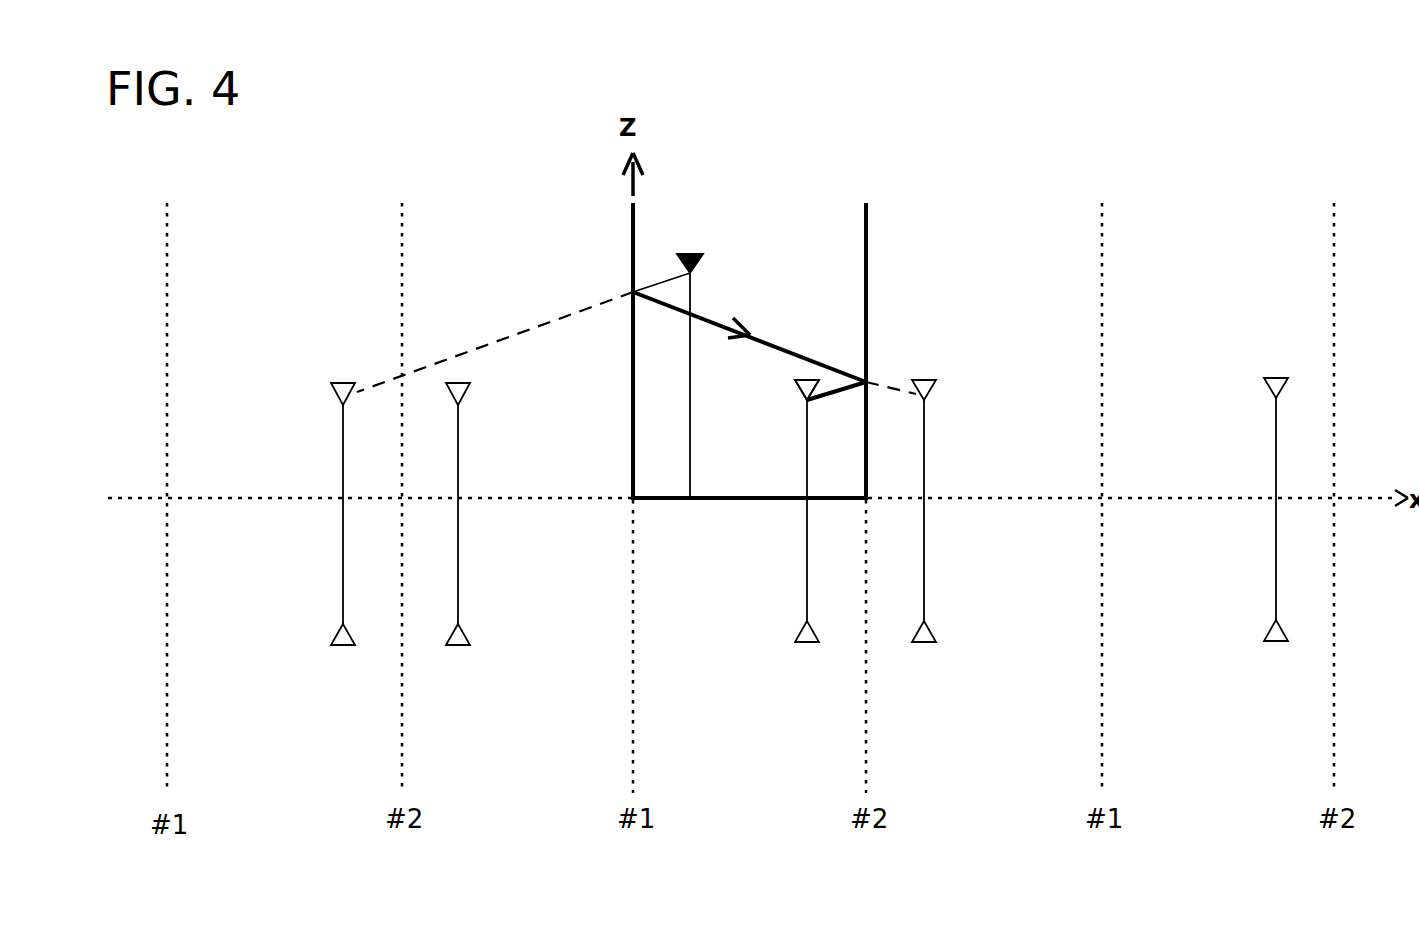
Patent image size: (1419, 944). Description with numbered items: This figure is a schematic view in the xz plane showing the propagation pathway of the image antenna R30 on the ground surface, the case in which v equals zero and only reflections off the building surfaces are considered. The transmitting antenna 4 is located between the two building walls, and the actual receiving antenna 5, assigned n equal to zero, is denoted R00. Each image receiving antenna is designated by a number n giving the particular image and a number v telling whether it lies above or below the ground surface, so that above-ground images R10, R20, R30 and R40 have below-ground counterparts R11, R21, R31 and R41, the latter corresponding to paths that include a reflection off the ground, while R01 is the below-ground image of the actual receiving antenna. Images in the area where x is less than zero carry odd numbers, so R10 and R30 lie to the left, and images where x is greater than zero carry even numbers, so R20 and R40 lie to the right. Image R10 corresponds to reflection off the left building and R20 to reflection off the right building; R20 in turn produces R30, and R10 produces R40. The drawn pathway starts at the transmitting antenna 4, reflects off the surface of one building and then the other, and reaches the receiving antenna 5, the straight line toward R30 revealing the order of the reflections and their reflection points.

The transmitting antenna 4 is at (690, 256).
The receiving antenna 5 is at (802, 400).
The actual receiving antenna image designation R00 is at (807, 363).
The image receiving antenna beneath ground for n equal to zero R01 is at (807, 595).
The first image receiving antenna above ground R10 is at (457, 412).
The first image receiving antenna beneath ground R11 is at (457, 595).
The second image receiving antenna above ground R20 is at (923, 412).
The second image receiving antenna beneath ground R21 is at (923, 595).
The third image receiving antenna above ground R30 is at (342, 412).
The third image receiving antenna beneath ground R31 is at (342, 595).
The fourth image receiving antenna above ground R40 is at (1273, 412).
The fourth image receiving antenna beneath ground R41 is at (1273, 594).